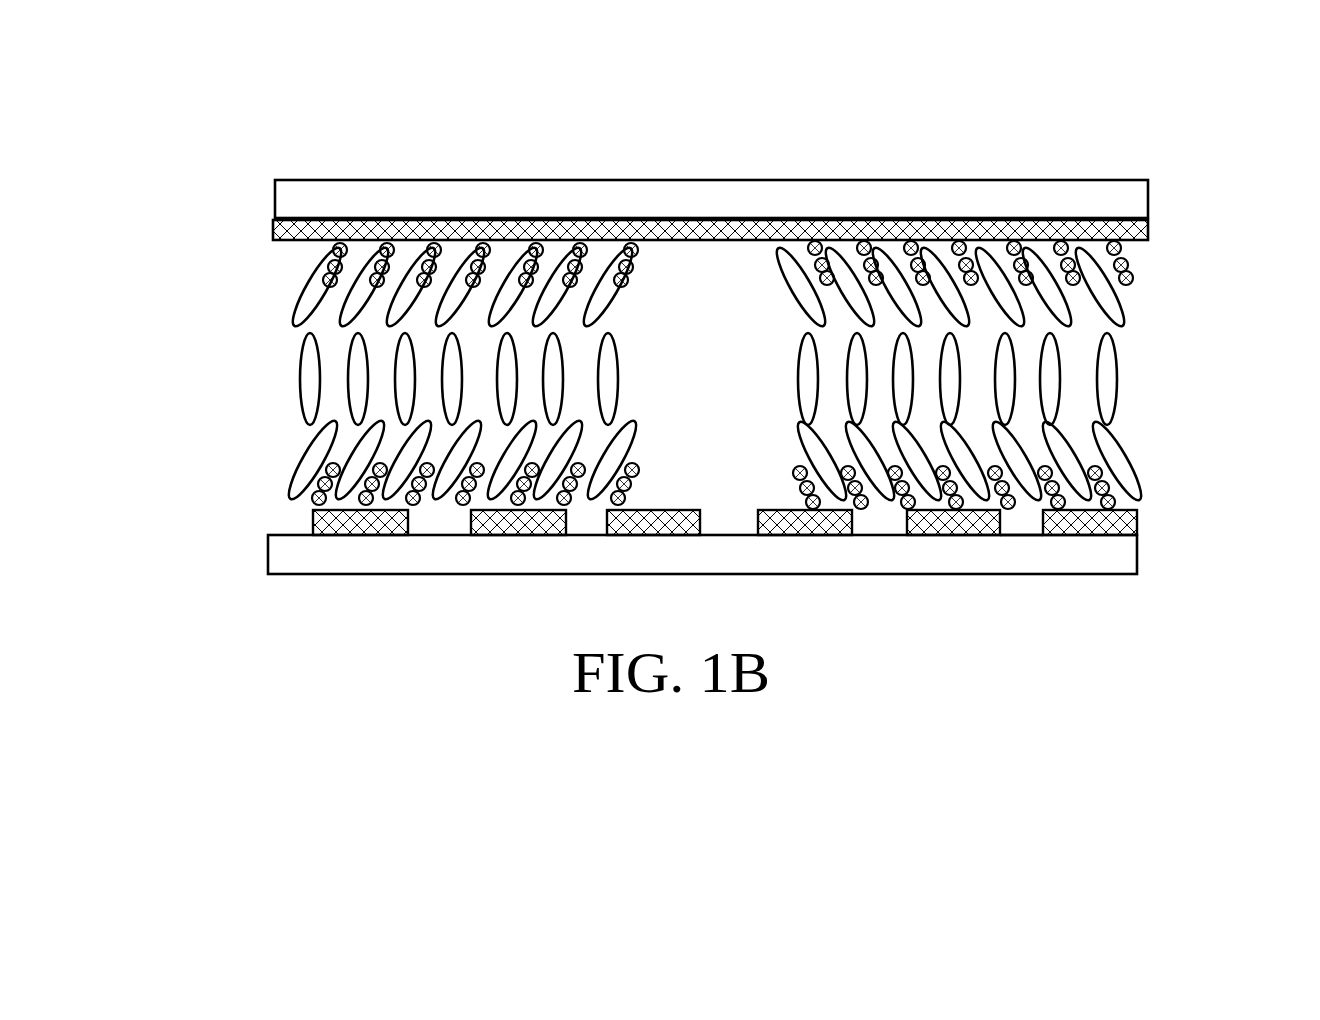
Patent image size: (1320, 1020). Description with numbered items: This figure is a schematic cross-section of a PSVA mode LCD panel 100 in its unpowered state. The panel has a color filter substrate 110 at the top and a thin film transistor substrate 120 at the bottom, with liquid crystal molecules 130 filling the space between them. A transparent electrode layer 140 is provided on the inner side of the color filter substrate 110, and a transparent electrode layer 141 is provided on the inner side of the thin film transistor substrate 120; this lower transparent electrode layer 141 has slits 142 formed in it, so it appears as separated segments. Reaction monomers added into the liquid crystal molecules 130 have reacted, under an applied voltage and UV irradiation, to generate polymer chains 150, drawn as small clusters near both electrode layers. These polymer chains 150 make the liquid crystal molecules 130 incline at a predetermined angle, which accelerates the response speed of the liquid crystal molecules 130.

The LCD panel 100 is at (258, 155).
The color filter substrate 110 is at (1122, 195).
The thin film transistor substrate 120 is at (1128, 568).
The liquid crystal molecules 130 is at (1113, 380).
The transparent electrode layer 140 is at (1147, 218).
The transparent electrode layer 141 is at (1123, 528).
The slits 142 is at (1023, 522).
The polymer chains 150 is at (1133, 277).